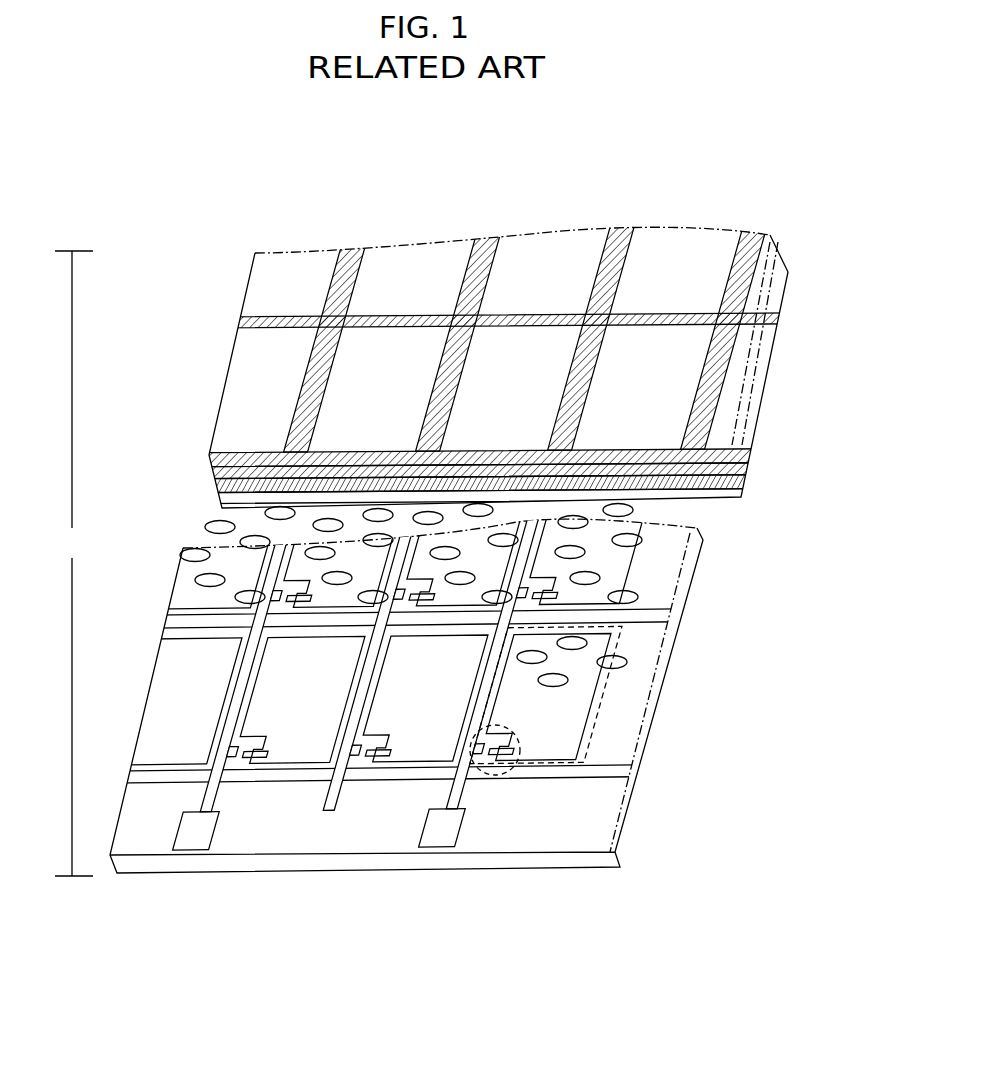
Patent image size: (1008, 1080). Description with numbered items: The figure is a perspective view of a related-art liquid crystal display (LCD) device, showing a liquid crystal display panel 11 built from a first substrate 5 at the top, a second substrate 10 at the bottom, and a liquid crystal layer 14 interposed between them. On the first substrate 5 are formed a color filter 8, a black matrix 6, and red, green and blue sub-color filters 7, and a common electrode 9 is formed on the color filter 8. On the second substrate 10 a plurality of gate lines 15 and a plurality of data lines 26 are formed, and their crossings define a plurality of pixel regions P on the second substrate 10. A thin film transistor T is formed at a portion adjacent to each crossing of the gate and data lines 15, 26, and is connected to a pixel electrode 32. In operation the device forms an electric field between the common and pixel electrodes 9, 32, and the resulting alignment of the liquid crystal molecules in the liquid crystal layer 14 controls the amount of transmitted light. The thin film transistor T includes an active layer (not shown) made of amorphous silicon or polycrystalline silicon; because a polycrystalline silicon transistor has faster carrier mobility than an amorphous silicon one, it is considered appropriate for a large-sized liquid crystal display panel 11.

The first substrate 5 is at (214, 472).
The black matrix 6 is at (773, 318).
The sub color filter 7 is at (716, 280).
The color filter 8 is at (520, 359).
The common electrode 9 is at (744, 495).
The second substrate 10 is at (424, 709).
The liquid crystal display panel 11 is at (74, 563).
The liquid crystal layer 14 is at (628, 594).
The gate lines 15 is at (597, 774).
The data lines 26 is at (445, 805).
The pixel electrode 32 is at (594, 738).
The thin film transistor T is at (508, 772).
The pixel region P is at (605, 693).